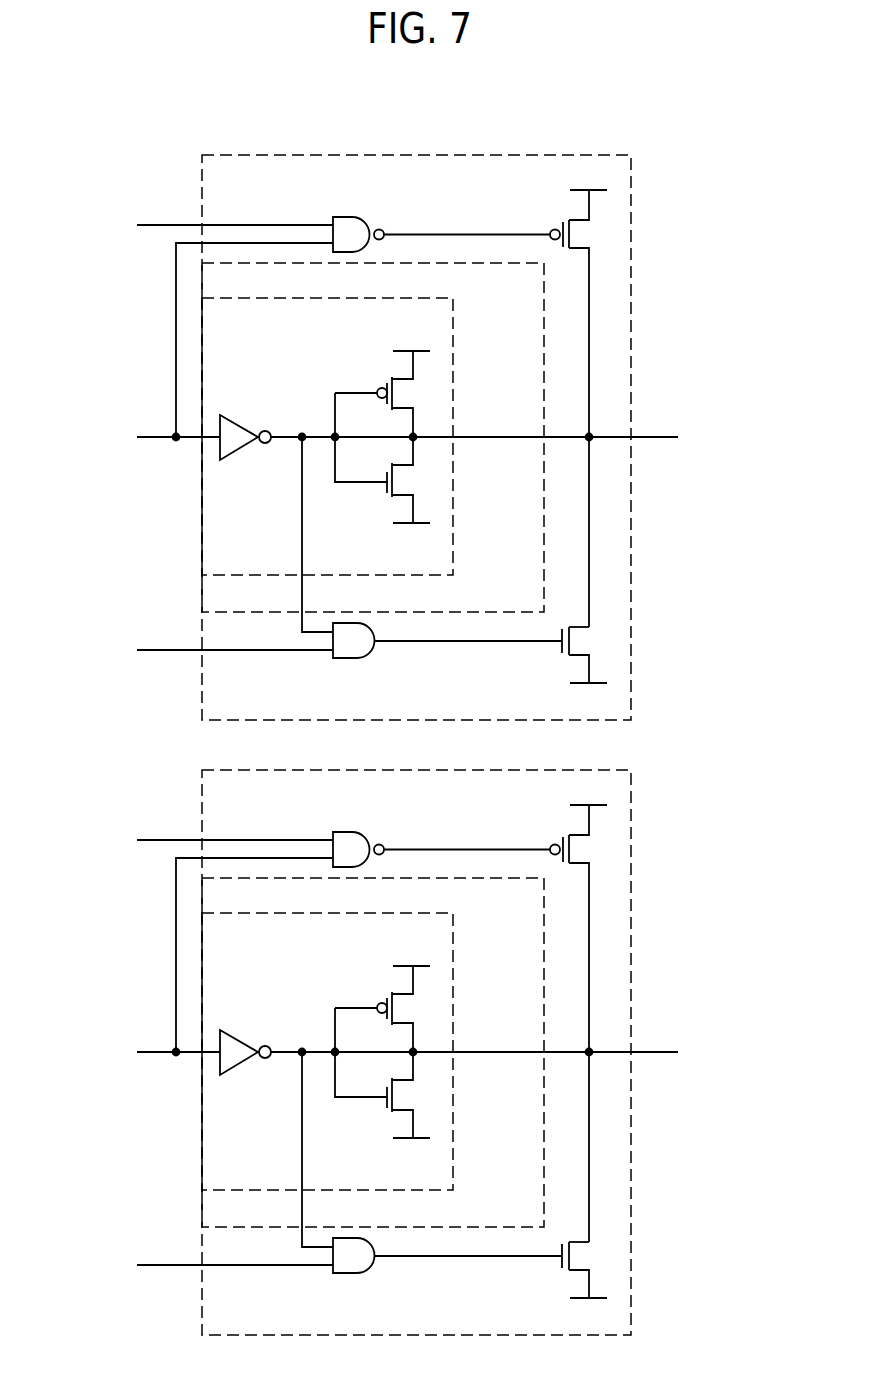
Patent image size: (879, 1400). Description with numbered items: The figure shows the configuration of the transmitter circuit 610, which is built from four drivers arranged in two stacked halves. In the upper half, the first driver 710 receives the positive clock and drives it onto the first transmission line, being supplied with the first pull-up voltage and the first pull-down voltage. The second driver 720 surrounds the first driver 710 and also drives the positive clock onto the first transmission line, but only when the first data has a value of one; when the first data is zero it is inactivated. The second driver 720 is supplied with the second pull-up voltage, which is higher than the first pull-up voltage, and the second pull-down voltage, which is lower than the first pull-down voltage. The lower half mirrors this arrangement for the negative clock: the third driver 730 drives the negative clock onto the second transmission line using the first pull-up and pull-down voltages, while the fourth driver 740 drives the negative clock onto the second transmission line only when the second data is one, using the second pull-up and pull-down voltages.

The transmitter circuit 610 is at (703, 142).
The second driver 720 is at (576, 155).
The first driver 710 is at (400, 298).
The fourth driver 740 is at (407, 1037).
The third driver 730 is at (327, 1038).